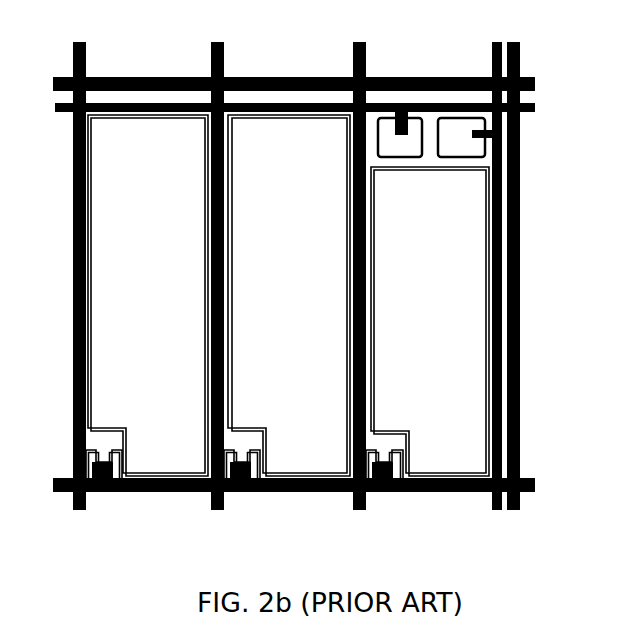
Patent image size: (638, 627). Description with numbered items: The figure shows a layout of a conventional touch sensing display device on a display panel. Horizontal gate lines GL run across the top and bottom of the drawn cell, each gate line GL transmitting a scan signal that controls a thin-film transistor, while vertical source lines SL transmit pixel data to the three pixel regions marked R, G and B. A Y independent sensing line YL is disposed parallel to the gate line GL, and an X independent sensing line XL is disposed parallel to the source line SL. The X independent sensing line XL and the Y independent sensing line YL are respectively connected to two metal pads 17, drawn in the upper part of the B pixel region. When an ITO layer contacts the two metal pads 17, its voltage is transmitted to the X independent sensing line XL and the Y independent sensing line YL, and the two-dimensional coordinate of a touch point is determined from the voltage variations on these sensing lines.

The metal pads 17 is at (407, 147).
The source line SL is at (299, 263).
The gate line GL is at (278, 284).
The Y independent sensing line YL is at (533, 107).
The X independent sensing line XL is at (495, 505).
The red pixel R is at (147, 296).
The green pixel G is at (287, 296).
The blue pixel B is at (427, 322).